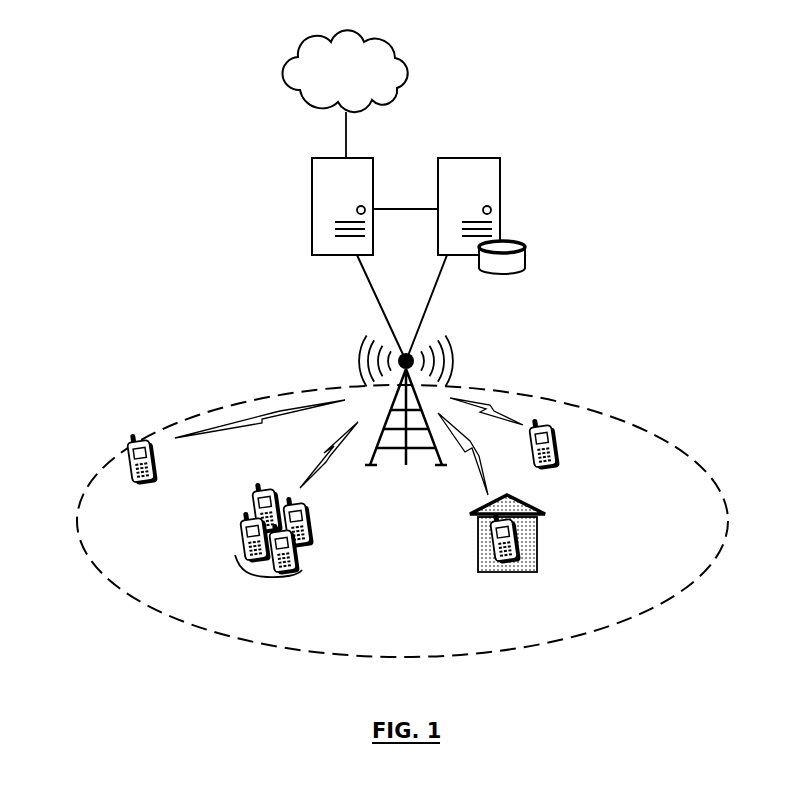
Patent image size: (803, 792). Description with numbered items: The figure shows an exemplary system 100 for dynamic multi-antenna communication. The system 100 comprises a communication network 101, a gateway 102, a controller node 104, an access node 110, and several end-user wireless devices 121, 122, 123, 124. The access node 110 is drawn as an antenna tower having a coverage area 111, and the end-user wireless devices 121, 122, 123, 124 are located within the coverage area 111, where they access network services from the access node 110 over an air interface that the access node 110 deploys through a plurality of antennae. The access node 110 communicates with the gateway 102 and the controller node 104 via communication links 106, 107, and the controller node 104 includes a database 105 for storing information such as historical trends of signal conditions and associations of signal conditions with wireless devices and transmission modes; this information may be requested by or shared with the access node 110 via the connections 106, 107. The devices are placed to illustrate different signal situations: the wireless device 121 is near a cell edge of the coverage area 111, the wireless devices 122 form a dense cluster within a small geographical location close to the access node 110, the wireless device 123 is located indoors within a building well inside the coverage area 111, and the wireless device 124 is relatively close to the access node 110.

The system 100 is at (490, 58).
The communication network 101 is at (366, 81).
The gateway 102 is at (311, 178).
The controller node 104 is at (500, 177).
The database 105 is at (525, 243).
The communication link 106 is at (371, 290).
The communication link 107 is at (437, 289).
The access node 110 is at (406, 468).
The coverage area 111 is at (260, 397).
The wireless device 121 is at (127, 487).
The wireless devices 122 is at (267, 578).
The wireless device 123 is at (512, 570).
The wireless device 124 is at (557, 475).